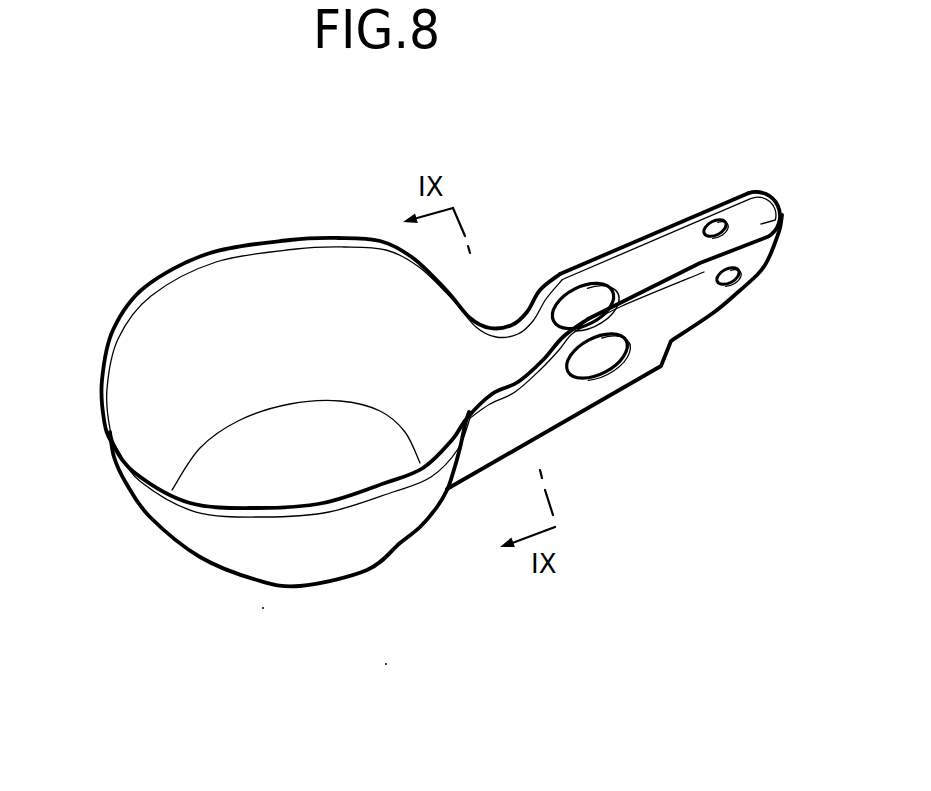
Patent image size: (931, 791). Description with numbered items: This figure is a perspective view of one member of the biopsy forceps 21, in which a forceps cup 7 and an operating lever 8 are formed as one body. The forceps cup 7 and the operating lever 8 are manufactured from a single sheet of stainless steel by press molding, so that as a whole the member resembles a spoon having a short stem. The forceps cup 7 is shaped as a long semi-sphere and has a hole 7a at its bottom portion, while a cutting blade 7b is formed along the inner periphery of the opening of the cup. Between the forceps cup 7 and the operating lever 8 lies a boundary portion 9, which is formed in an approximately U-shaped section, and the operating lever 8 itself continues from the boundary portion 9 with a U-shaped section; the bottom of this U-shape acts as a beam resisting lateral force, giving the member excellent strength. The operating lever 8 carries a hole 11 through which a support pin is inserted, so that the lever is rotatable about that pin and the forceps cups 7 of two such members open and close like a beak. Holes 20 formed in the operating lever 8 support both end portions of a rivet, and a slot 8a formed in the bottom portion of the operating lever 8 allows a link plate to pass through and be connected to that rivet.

The forceps cup 7 is at (218, 287).
The hole 7a is at (295, 428).
The cutting blade 7b is at (147, 283).
The operating lever 8 is at (640, 235).
The slot 8a is at (708, 322).
The boundary portion 9 is at (520, 424).
The hole 11 is at (610, 372).
The holes 20 is at (738, 282).
The biopsy forceps 21 is at (183, 584).